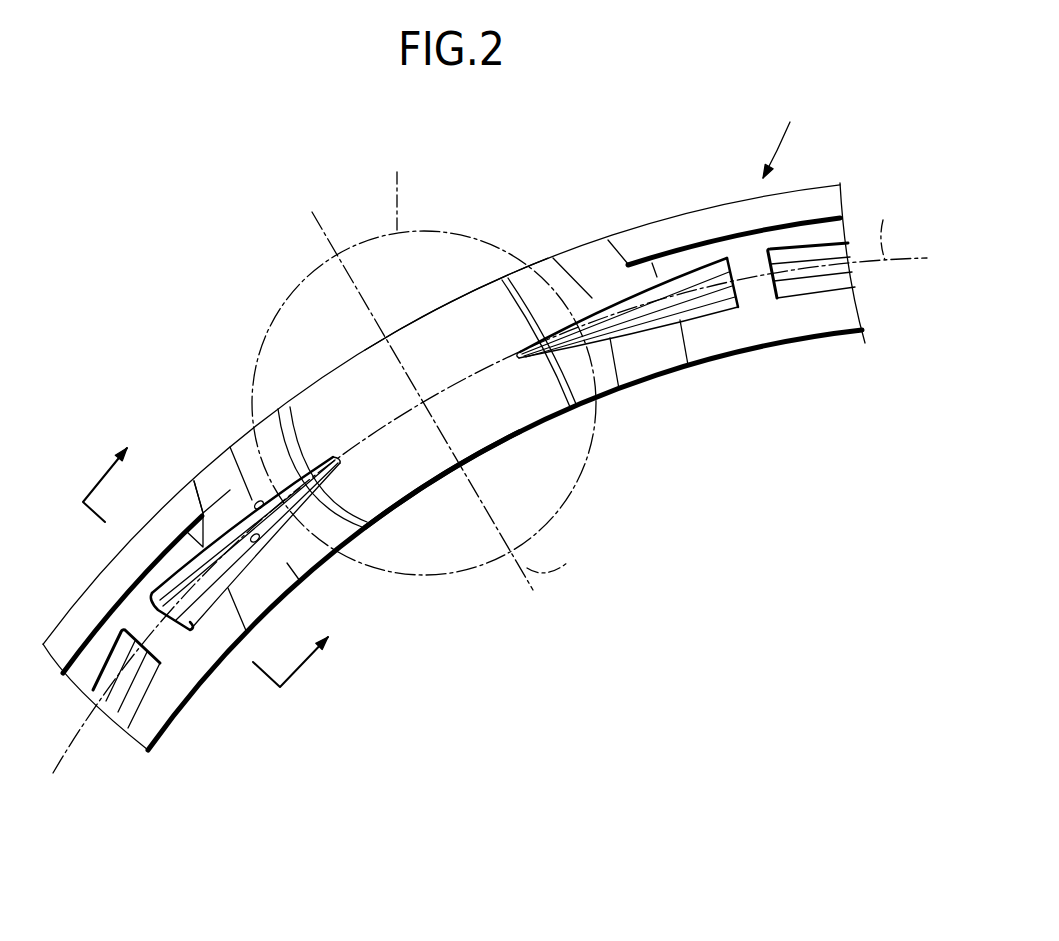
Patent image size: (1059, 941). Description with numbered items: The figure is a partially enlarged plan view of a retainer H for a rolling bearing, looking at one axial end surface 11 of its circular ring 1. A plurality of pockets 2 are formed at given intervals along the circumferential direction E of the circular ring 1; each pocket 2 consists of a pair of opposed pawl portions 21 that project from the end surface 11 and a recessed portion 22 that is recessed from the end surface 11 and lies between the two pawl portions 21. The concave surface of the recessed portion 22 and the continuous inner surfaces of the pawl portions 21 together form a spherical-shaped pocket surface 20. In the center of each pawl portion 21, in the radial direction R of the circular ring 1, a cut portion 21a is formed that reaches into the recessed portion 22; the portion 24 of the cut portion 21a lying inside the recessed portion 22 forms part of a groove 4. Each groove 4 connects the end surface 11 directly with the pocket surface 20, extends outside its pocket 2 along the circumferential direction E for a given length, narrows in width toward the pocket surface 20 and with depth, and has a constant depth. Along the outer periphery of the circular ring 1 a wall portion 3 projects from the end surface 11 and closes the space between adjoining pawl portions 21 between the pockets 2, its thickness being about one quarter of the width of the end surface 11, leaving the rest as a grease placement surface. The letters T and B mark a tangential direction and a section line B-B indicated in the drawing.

The circular ring 1 is at (132, 737).
The pocket 2 is at (483, 300).
The pocket surface 20 is at (424, 401).
The wall portion 3 is at (80, 622).
The groove 4 is at (707, 318).
The end surface 11 is at (802, 323).
The pawl portion 21 is at (263, 428).
The cut portion 21a is at (215, 465).
The recessed portion 22 is at (415, 467).
The portion of the cut portion 24 is at (280, 563).
The tangential direction line T is at (394, 186).
The radial direction R is at (558, 567).
The circumferential direction E is at (880, 225).
The retainer H is at (796, 116).
The section line B- B is at (205, 570).